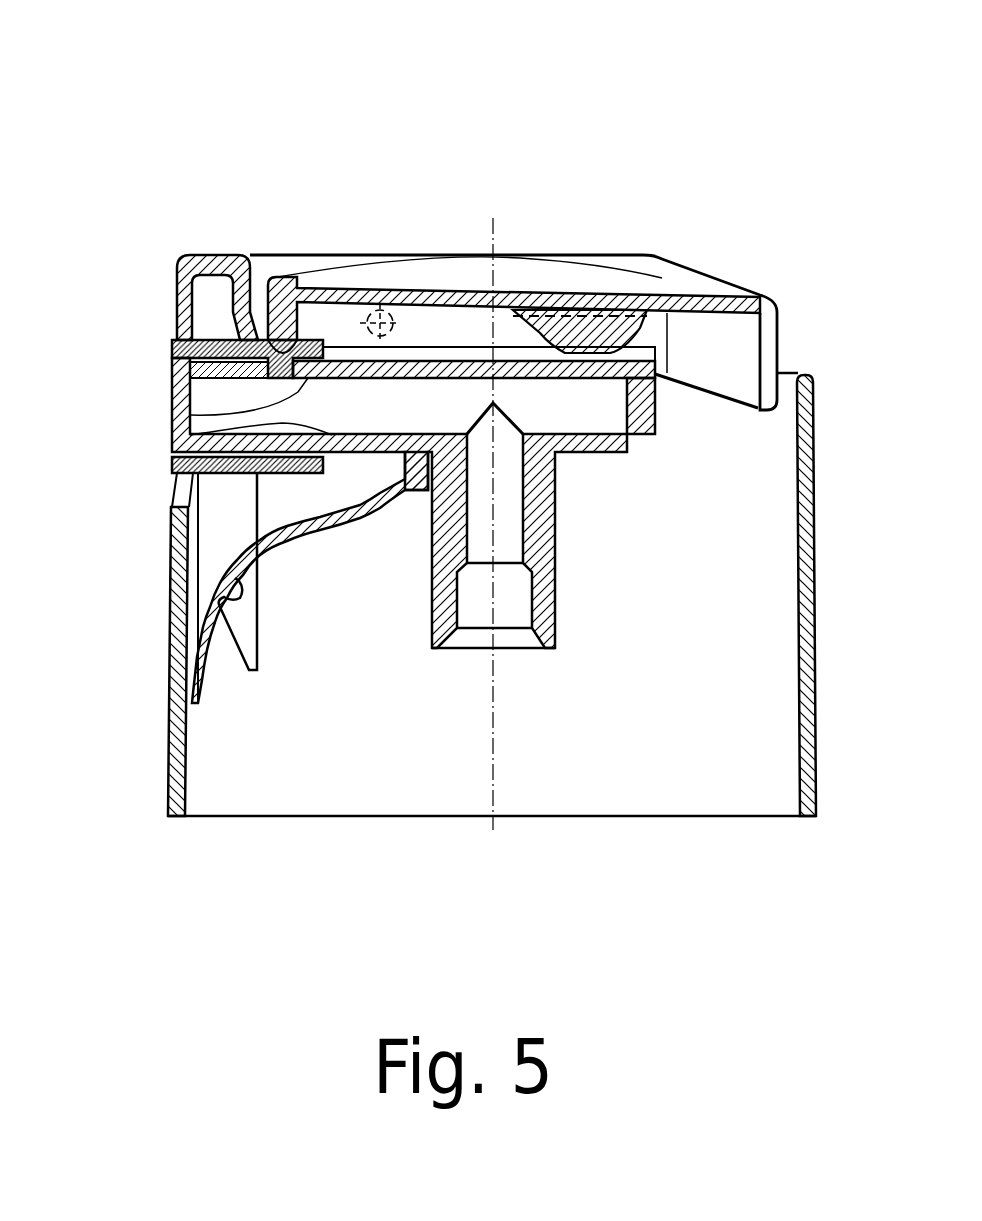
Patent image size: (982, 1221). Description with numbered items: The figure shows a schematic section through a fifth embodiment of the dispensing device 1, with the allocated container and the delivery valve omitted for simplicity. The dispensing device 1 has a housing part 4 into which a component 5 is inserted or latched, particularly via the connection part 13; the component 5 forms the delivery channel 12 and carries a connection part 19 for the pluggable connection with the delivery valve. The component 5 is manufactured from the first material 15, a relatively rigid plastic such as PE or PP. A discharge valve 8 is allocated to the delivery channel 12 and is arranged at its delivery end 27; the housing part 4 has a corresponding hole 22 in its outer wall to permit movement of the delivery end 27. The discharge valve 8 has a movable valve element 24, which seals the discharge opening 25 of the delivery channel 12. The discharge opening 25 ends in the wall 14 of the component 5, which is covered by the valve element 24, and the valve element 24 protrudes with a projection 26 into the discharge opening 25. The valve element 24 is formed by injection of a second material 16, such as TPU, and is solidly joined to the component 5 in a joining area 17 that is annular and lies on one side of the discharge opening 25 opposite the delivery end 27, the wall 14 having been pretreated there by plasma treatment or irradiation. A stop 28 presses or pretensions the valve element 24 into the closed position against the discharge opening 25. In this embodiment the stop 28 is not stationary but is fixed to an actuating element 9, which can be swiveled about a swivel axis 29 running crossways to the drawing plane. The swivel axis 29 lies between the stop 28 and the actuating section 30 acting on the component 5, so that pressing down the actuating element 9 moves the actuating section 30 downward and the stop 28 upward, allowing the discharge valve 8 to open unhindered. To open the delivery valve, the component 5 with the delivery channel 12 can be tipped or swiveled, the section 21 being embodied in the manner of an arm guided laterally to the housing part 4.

The dispensing device 1 is at (186, 200).
The housing part 4 is at (170, 728).
The component 5 is at (660, 345).
The discharge valve 8 is at (232, 327).
The actuating element 9 is at (631, 293).
The delivery channel 12 is at (593, 430).
The connection part 13 is at (222, 530).
The wall 14 is at (402, 454).
The first material 15 is at (172, 443).
The second material 16 is at (187, 341).
The valve element 24 is at (174, 346).
The joining area 17 is at (172, 413).
The connection part 19 is at (552, 620).
The section 21 is at (365, 455).
The hole 22 is at (173, 492).
The discharge opening 25 is at (305, 363).
The projection 26 is at (172, 378).
The delivery end 27 is at (172, 457).
The stop 28 is at (298, 280).
The swivel axis 29 is at (384, 311).
The actuating section 30 is at (557, 332).